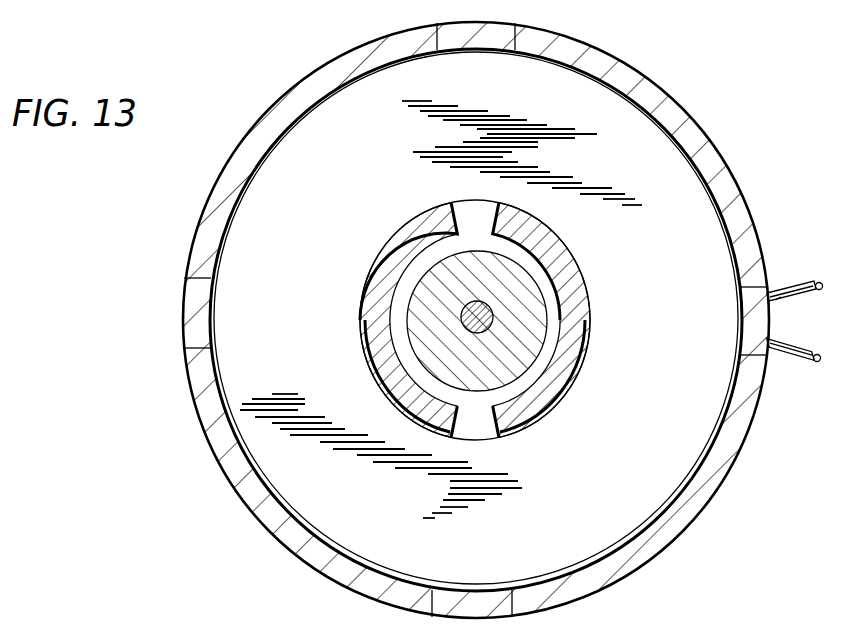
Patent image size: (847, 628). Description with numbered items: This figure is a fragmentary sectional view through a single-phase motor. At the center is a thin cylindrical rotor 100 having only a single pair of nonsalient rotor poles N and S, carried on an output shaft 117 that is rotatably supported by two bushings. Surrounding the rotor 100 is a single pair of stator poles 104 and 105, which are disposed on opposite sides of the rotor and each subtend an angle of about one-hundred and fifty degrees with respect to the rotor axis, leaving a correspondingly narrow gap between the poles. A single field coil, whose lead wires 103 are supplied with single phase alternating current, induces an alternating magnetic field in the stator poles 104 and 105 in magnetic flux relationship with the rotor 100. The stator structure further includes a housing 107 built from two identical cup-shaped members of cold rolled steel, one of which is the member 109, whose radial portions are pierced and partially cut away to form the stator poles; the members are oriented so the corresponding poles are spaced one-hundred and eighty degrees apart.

The rotor 100 is at (430, 315).
The lead wires 103 is at (777, 302).
The stator pole 104 is at (398, 245).
The stator pole 105 is at (586, 322).
The housing 107 is at (288, 88).
The cup-shaped member 109 is at (662, 98).
The output shaft 117 is at (462, 322).